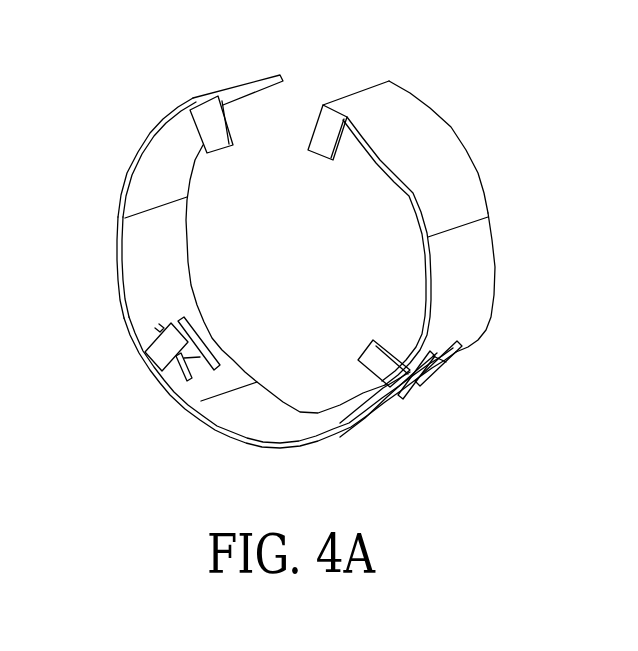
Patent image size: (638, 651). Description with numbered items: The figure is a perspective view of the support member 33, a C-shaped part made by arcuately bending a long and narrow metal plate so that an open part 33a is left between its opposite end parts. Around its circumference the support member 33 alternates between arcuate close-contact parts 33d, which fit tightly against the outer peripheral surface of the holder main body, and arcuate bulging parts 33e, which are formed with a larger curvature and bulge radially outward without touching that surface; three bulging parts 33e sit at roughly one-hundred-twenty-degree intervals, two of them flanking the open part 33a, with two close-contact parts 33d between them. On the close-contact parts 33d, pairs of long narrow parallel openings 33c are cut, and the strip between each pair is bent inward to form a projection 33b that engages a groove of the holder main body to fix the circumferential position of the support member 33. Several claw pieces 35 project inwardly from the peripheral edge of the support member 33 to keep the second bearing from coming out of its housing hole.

The support member 33 is at (446, 95).
The open part 33a is at (298, 93).
The projection 33b is at (198, 360).
The opening 33c is at (180, 328).
The close-contact part 33d is at (117, 257).
The bulging part 33e is at (160, 122).
The claw piece 35 is at (322, 139).